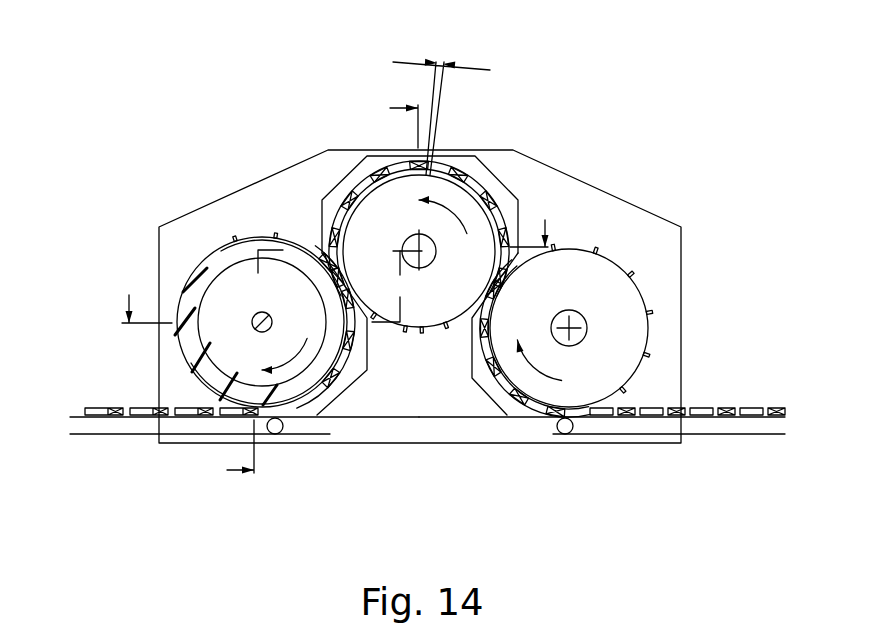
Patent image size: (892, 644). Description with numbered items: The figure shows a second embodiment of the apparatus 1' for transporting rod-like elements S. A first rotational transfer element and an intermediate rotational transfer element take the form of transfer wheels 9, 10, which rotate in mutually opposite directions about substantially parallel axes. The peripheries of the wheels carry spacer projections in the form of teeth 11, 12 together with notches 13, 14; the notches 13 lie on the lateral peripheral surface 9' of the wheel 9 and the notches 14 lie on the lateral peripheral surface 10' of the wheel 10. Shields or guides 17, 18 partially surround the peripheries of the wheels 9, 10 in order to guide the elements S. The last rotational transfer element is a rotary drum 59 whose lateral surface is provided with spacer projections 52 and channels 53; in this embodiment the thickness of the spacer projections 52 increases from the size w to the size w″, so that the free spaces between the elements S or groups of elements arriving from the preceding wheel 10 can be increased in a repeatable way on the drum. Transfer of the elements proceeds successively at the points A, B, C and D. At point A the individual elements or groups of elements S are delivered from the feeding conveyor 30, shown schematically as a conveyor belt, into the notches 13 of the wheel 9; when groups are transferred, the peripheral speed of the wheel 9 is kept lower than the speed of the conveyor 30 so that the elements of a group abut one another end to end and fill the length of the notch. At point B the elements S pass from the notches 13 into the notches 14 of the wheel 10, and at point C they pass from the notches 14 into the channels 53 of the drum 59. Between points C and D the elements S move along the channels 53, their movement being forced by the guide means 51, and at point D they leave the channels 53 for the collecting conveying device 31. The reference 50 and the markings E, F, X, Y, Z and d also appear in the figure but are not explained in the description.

The apparatus 1' is at (420, 221).
The transfer wheel 10 is at (387, 190).
The lateral peripheral surface 10' is at (363, 381).
The teeth 12 is at (472, 177).
The notches 14 is at (423, 332).
The shield 18 is at (497, 188).
The shield 17 is at (500, 397).
The guide means 51 is at (327, 398).
The notches 13 is at (615, 258).
The teeth 11 is at (633, 268).
The transfer wheel 9 is at (633, 345).
The lateral peripheral surface 9' is at (621, 308).
The feeding conveyor 30 is at (637, 417).
The collecting conveying device 31 is at (197, 422).
The left drum rim 50 is at (188, 275).
The spacer projections 52 is at (193, 370).
The channels 53 is at (197, 343).
The rotary drum 59 is at (227, 247).
The transfer point A is at (578, 418).
The transfer point B is at (505, 262).
The transfer point C is at (337, 262).
The transfer point D is at (263, 424).
The direction E is at (322, 289).
The direction F is at (345, 268).
The rod-like elements S is at (703, 402).
The axis X is at (262, 322).
The axis Y is at (415, 234).
The axis Z is at (569, 328).
The distance d is at (441, 102).